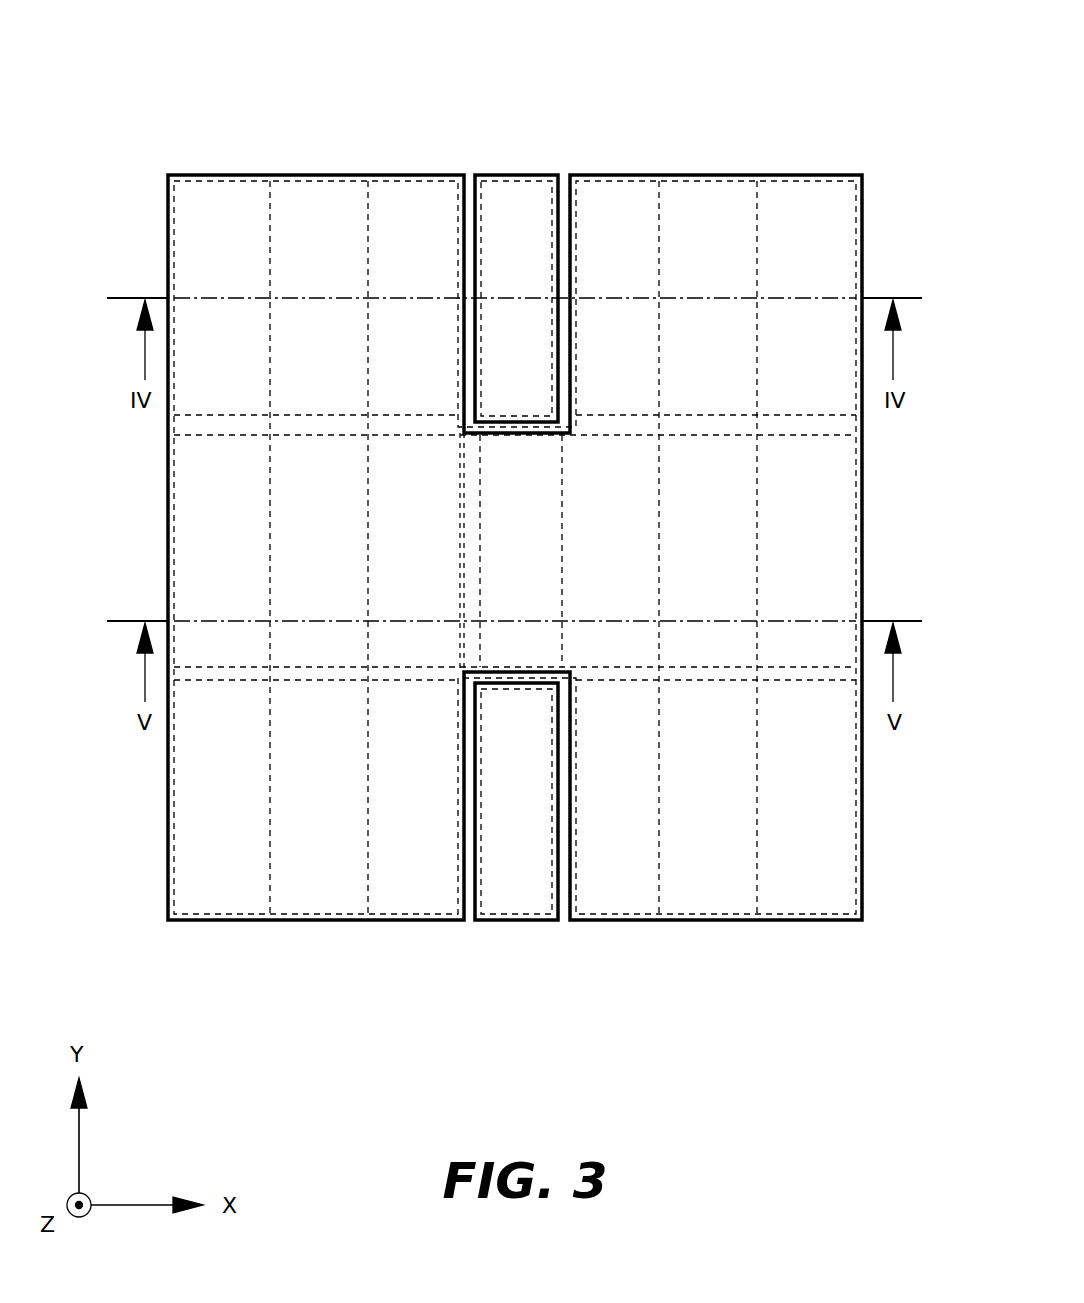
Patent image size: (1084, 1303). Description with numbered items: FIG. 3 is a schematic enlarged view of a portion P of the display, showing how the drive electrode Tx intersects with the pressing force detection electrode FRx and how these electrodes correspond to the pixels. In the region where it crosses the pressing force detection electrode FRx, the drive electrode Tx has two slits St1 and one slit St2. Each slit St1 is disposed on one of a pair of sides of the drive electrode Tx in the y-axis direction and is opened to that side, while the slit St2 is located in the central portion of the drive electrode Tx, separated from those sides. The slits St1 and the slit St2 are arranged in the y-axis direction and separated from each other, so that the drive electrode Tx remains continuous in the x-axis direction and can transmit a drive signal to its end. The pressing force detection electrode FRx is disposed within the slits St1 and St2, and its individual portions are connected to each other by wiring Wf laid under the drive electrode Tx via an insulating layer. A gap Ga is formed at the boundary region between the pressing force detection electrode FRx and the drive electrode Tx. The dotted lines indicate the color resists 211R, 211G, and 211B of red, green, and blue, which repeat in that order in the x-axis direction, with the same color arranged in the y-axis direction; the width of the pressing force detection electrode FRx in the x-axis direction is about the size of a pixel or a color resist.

The portion P is at (866, 187).
The drive electrode Tx is at (168, 238).
The pressing force detection electrode FRx is at (543, 178).
The gap Ga is at (563, 176).
The blue color resist 211B is at (227, 207).
The red color resist 211R is at (335, 207).
The green color resist 211G is at (430, 207).
The slit St1 is at (580, 280).
The slit St2 is at (457, 766).
The wiring Wf is at (487, 546).